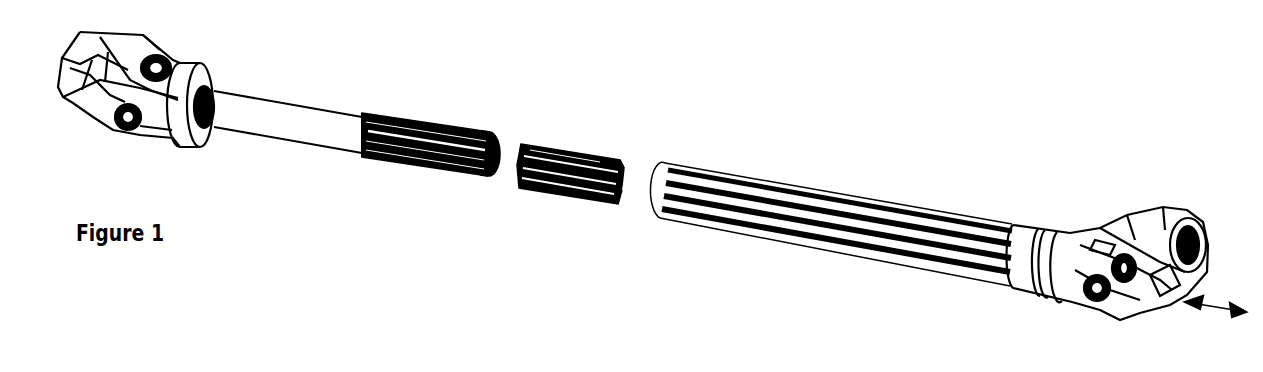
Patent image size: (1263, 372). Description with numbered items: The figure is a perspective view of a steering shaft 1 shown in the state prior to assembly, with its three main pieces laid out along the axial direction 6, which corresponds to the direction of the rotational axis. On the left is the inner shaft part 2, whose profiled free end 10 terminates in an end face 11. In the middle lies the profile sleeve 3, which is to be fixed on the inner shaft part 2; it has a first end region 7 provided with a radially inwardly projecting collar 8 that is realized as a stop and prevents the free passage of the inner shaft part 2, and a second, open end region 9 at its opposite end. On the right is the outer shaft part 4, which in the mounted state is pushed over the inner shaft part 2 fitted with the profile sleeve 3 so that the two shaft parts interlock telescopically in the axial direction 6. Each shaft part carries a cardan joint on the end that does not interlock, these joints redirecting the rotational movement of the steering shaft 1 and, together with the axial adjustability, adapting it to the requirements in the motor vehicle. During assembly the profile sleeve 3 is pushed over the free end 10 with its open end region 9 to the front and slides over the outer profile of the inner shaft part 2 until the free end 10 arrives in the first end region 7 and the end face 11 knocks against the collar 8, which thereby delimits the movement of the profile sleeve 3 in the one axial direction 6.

The steering shaft 1 is at (888, 139).
The inner shaft part 2 is at (330, 124).
The profile sleeve 3 is at (575, 150).
The outer shaft part 4 is at (762, 190).
The axial direction 6 is at (1218, 308).
The first end region 7 is at (622, 162).
The radially inwardly projecting collar 8 is at (606, 206).
The second, open end region 9 is at (521, 144).
The free end 10 is at (496, 130).
The end face 11 is at (487, 178).